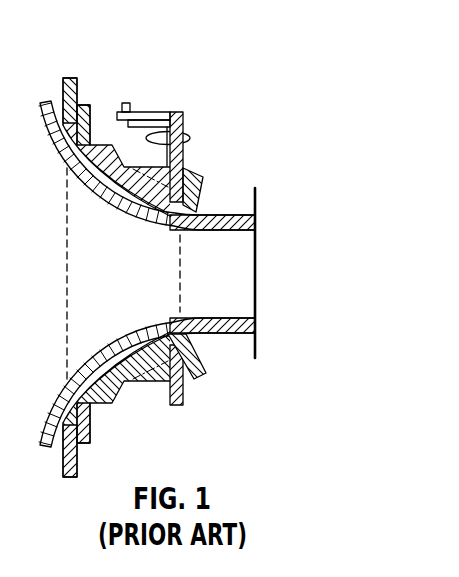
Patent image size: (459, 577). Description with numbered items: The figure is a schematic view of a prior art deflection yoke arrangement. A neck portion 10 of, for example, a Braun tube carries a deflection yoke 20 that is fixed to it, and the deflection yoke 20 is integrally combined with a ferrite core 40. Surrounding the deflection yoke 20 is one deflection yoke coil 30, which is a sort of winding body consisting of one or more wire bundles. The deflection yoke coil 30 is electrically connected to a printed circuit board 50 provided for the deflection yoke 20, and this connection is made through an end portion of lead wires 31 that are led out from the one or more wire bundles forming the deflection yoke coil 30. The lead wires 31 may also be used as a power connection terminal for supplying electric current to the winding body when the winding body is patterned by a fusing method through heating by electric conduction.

The neck portion 10 is at (230, 214).
The deflection yoke 20 is at (192, 123).
The deflection yoke coil 30 is at (200, 167).
The lead wires 31 is at (185, 146).
The ferrite core 40 is at (103, 145).
The printed circuit board 50 is at (160, 112).